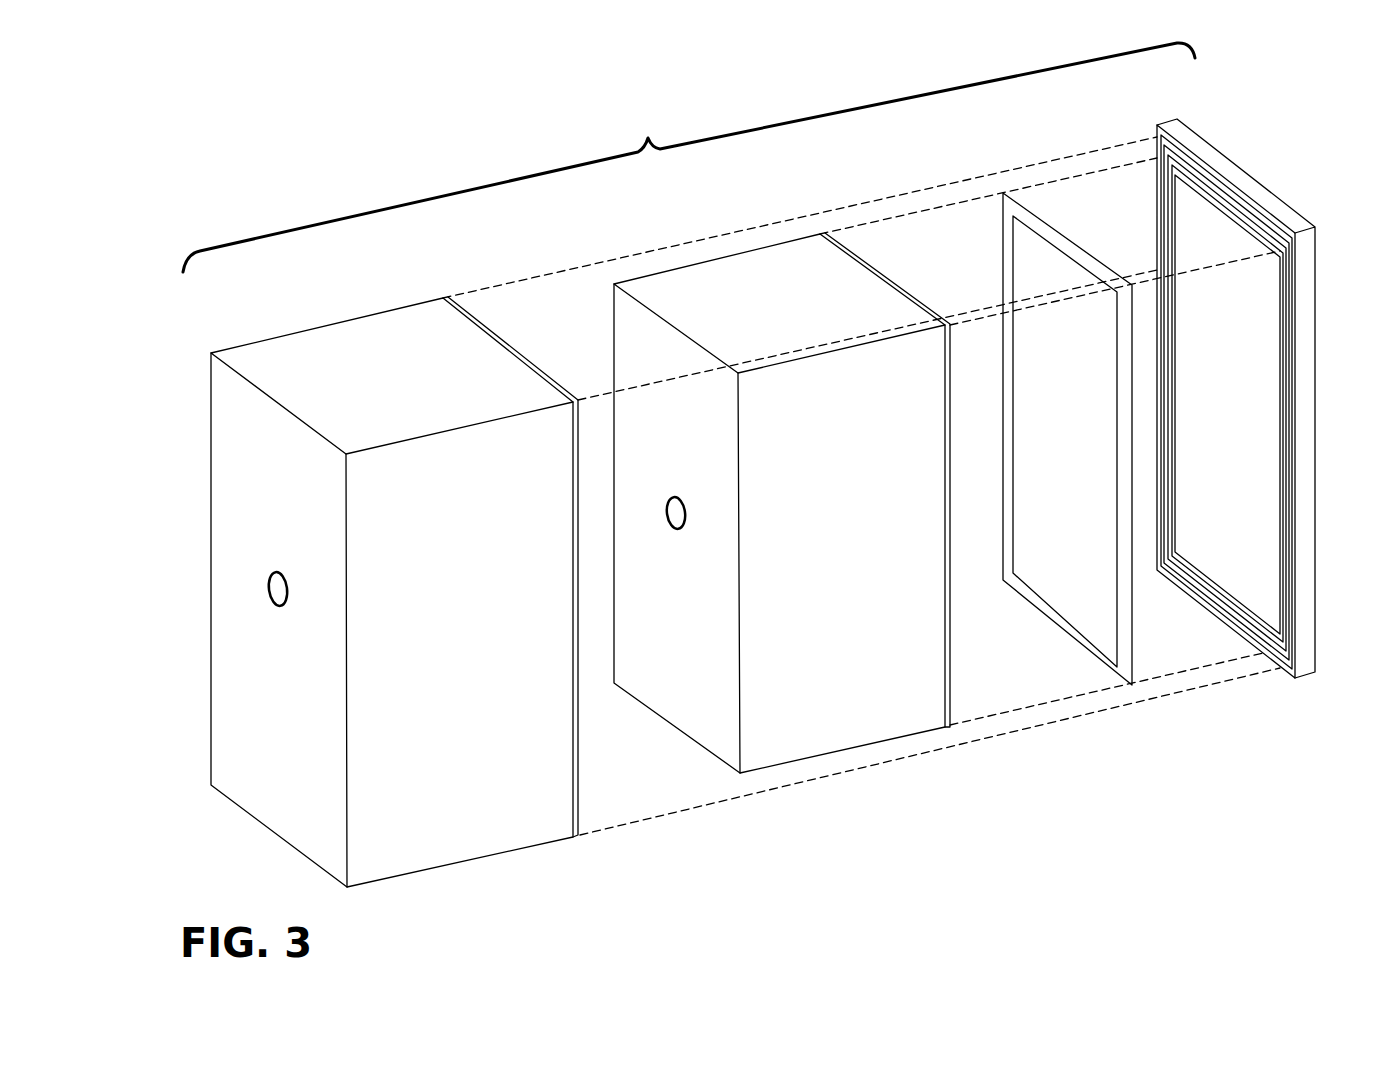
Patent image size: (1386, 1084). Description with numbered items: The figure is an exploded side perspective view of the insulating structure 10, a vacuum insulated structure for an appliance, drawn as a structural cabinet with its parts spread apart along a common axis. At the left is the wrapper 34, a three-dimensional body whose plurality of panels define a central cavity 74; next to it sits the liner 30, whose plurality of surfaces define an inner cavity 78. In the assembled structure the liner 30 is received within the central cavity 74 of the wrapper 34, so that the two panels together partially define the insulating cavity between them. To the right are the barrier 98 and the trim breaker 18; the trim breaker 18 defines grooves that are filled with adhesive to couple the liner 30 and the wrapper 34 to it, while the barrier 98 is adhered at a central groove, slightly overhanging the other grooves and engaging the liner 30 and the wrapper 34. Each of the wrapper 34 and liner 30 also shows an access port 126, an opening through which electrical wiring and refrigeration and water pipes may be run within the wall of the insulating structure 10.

The insulating structure 10 is at (689, 157).
The trim breaker 18 is at (1226, 170).
The liner 30 is at (743, 285).
The wrapper 34 is at (337, 342).
The central cavity 74 is at (588, 754).
The inner cavity 78 is at (950, 644).
The barrier 98 is at (1003, 200).
The access ports 126 is at (268, 596).